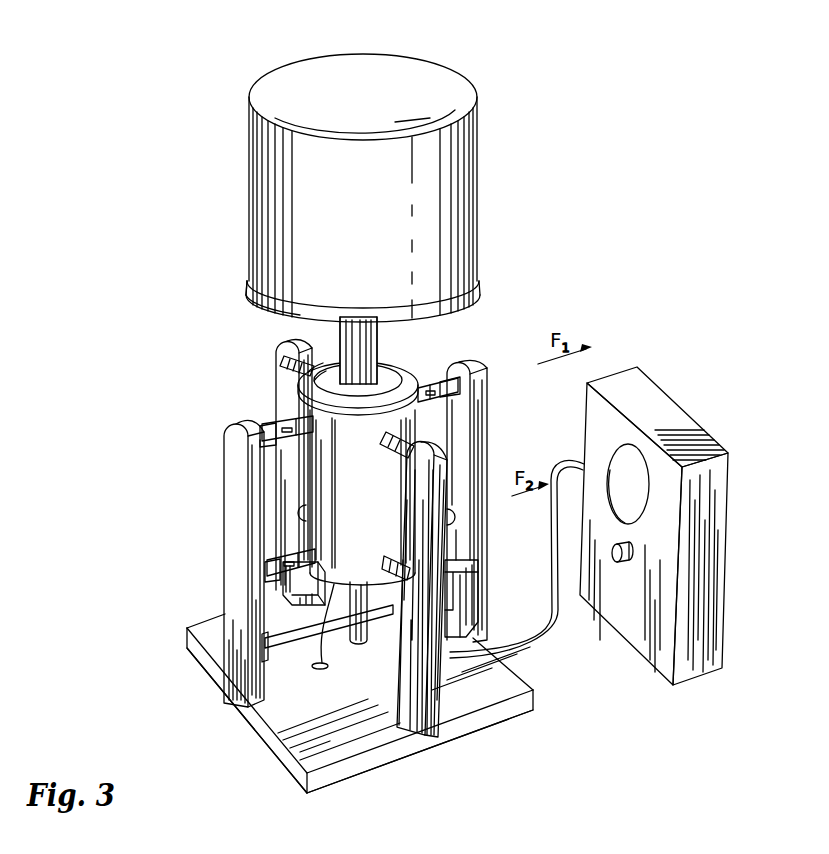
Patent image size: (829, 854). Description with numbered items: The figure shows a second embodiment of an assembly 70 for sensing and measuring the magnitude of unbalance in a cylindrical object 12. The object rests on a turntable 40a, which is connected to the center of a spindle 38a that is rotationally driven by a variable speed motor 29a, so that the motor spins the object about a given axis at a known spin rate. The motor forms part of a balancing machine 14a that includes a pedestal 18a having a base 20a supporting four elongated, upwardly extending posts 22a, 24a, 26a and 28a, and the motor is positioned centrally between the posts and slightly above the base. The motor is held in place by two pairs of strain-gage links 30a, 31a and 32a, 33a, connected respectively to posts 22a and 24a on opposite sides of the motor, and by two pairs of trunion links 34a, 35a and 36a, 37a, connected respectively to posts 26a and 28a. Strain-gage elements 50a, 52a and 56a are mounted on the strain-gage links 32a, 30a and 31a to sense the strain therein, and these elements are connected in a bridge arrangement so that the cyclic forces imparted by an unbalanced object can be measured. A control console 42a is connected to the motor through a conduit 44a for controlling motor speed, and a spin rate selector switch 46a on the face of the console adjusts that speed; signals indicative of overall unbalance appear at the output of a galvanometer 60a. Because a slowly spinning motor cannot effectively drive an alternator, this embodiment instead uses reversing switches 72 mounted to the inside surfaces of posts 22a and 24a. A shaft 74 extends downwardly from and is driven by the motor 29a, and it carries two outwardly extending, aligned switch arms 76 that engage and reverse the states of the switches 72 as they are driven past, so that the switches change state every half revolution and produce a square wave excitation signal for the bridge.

The second embodiment of assembly 70 is at (124, 246).
The cylindrical object 12 is at (345, 189).
The turntable 40a is at (268, 313).
The spindle 38a is at (360, 348).
The trunion link 34a is at (286, 362).
The strain-gage element 52a is at (282, 428).
The strain-gage link 30a is at (268, 424).
The post 26a is at (230, 437).
The trunion link 35a is at (298, 512).
The post 22a is at (236, 504).
The strain-gage element 56a is at (284, 562).
The strain-gage link 31a is at (268, 572).
The reversing switches 72 is at (295, 602).
The switch arms 76 is at (300, 649).
The shaft 74 is at (352, 641).
The pedestal 18a is at (217, 698).
The base 20a is at (266, 730).
The post 28a is at (428, 705).
The variable speed motor 29a is at (383, 448).
The trunion link 36a is at (390, 440).
The trunion link 37a is at (386, 566).
The strain-gage element 50a is at (430, 391).
The strain-gage link 32a is at (444, 386).
The balancing machine 14a is at (522, 376).
The post 24a is at (474, 473).
The strain-gage link 33a is at (455, 517).
The conduit 44a is at (551, 543).
The control console 42a is at (600, 432).
The galvanometer 60a is at (624, 473).
The spin rate selector switch 46a is at (620, 563).